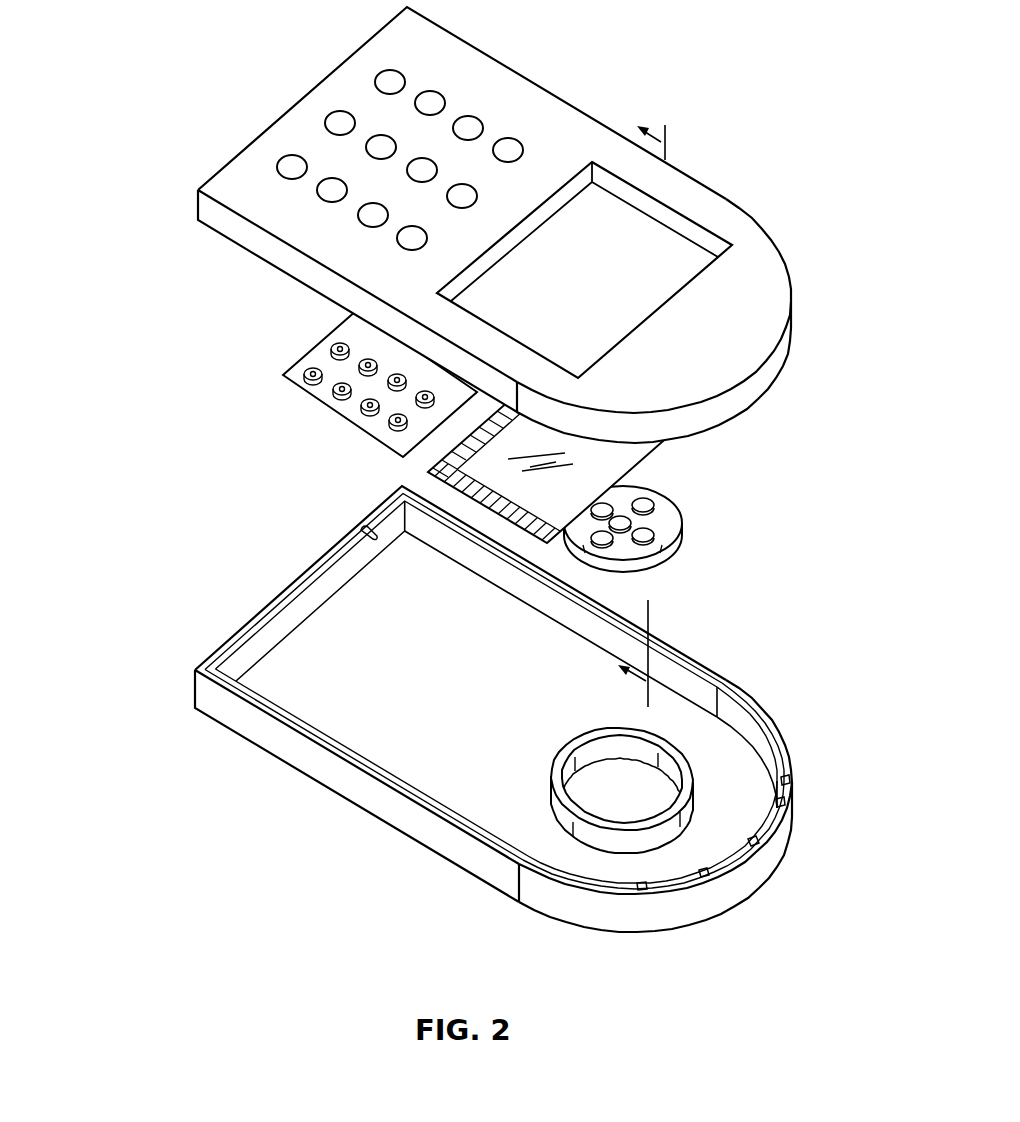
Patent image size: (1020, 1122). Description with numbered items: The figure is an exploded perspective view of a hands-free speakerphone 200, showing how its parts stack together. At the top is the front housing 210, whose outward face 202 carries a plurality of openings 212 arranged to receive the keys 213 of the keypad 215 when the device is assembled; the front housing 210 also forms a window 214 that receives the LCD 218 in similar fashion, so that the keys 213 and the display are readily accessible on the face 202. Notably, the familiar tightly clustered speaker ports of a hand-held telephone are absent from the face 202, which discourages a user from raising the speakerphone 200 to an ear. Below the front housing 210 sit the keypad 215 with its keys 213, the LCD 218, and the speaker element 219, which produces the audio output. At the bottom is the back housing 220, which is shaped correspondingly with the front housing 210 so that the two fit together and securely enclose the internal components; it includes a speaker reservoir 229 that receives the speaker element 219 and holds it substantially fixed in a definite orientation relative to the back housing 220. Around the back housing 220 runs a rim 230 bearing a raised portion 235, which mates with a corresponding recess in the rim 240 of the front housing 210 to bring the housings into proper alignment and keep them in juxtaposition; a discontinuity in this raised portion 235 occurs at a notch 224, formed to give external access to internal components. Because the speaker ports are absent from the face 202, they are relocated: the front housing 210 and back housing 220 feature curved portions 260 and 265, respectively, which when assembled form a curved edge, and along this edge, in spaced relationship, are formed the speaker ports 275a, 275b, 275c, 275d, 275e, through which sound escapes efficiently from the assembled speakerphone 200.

The hands-free speakerphone 200 is at (474, 482).
The face 202 is at (580, 133).
The front housing 210 is at (524, 224).
The openings 212 is at (470, 90).
The keys 213 is at (322, 355).
The window 214 is at (660, 202).
The keypad 215 is at (354, 383).
The LCD 218 is at (651, 452).
The speaker element 219 is at (683, 527).
The back housing 220 is at (548, 722).
The notch 224 is at (362, 528).
The speaker reservoir 229 is at (553, 814).
The rim 230 is at (686, 648).
The raised portion 235 is at (718, 673).
The rim 240 is at (524, 316).
The curved portion 260 is at (812, 350).
The curved portion 265 is at (769, 843).
The speaker port 275a is at (788, 780).
The speaker port 275b is at (784, 806).
The speaker port 275c is at (757, 848).
The speaker port 275d is at (708, 877).
The speaker port 275e is at (646, 890).